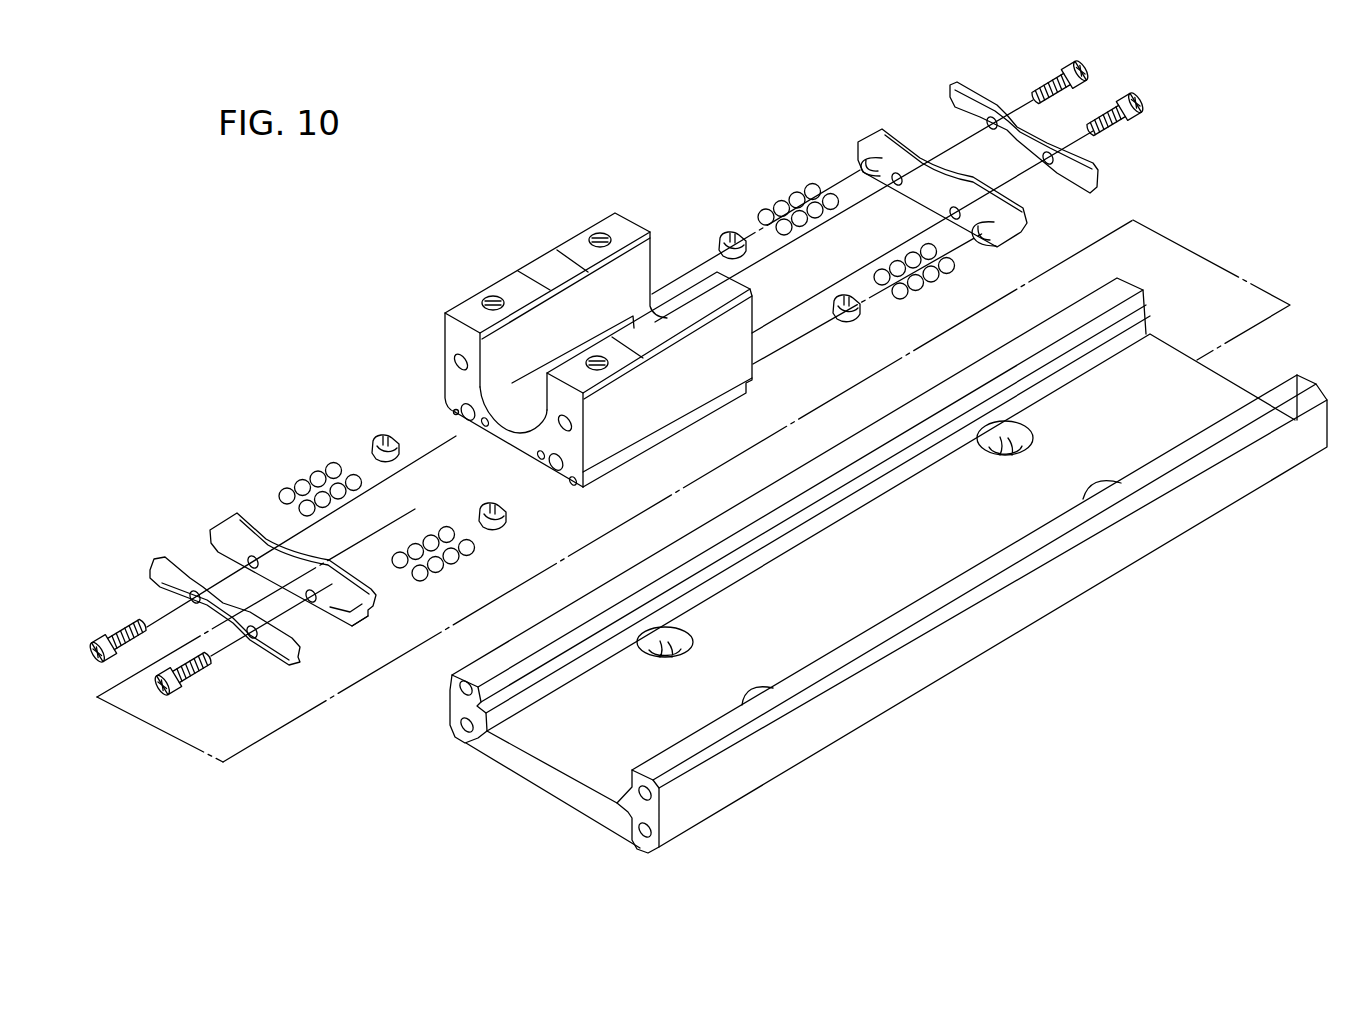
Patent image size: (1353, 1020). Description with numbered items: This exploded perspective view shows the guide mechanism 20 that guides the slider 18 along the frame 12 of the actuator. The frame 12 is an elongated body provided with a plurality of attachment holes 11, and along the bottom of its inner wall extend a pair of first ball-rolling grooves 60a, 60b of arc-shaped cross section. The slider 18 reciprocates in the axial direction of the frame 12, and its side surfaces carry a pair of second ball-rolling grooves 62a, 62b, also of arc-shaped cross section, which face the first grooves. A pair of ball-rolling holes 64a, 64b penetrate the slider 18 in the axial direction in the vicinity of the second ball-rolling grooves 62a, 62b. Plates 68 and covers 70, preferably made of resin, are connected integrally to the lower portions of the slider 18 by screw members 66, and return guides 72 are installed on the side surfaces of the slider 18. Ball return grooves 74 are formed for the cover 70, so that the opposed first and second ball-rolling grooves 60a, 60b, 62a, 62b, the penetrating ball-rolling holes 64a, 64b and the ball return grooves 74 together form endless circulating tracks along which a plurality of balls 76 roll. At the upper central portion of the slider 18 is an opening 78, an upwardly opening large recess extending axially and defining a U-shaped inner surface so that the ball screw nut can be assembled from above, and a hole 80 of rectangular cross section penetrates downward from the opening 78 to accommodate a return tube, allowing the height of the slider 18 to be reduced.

The attachment holes 11 is at (687, 632).
The frame 12 is at (852, 574).
The slider 18 is at (563, 365).
The guide mechanism 20 is at (616, 375).
The first ball-rolling groove 60a is at (478, 744).
The first ball-rolling groove 60b is at (612, 805).
The second ball-rolling groove 62a is at (447, 397).
The second ball-rolling groove 62b is at (617, 457).
The ball-rolling hole 64a is at (462, 420).
The ball-rolling hole 64b is at (557, 483).
The screw members 66 is at (120, 637).
The plate 68 is at (163, 573).
The cover 70 is at (230, 522).
The return guide 72 is at (388, 436).
The ball return grooves 74 is at (868, 168).
The balls 76 is at (325, 477).
The opening 78 is at (537, 337).
The hole 80 is at (537, 417).